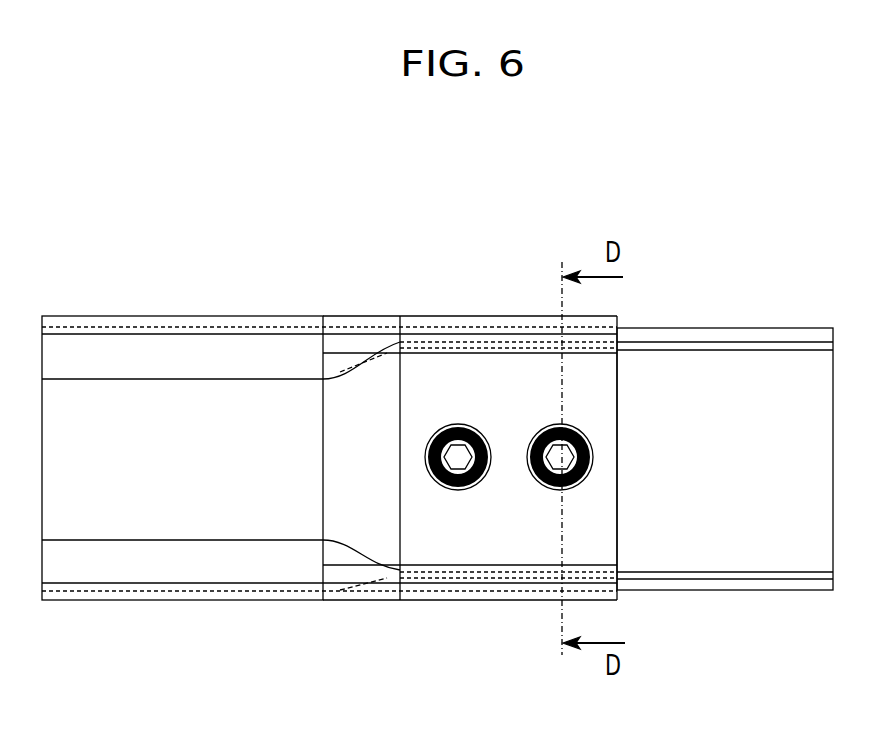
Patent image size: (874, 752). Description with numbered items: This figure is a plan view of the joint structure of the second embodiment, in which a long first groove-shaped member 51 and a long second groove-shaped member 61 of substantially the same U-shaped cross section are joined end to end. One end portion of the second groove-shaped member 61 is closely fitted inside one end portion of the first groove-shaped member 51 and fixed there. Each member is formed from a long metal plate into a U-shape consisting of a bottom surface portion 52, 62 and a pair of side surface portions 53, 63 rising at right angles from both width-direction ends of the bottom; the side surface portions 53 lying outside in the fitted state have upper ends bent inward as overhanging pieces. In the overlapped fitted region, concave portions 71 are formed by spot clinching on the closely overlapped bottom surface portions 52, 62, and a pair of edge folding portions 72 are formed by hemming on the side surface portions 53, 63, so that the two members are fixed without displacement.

The first groove-shaped member 51 is at (329, 438).
The bottom surface portion 52 is at (195, 467).
The side surface portions 53 is at (246, 308).
The second groove-shaped member 61 is at (725, 454).
The bottom surface portion 62 is at (750, 471).
The side surface portions 63 is at (757, 328).
The concave portions 71 is at (452, 425).
The edge folding portions 72 is at (528, 356).